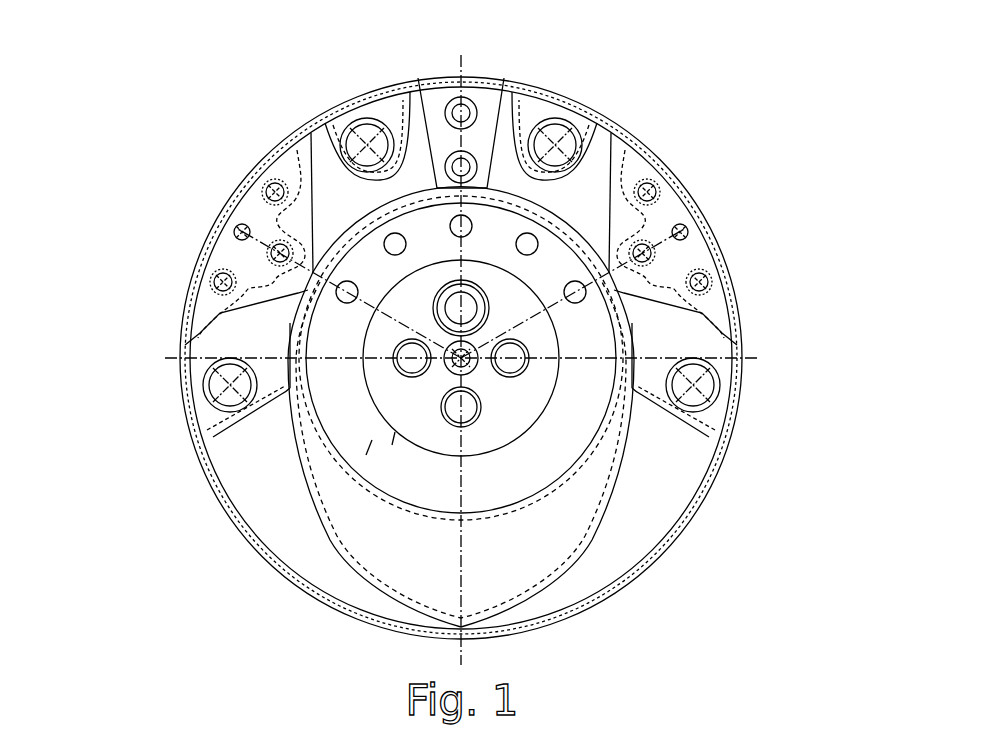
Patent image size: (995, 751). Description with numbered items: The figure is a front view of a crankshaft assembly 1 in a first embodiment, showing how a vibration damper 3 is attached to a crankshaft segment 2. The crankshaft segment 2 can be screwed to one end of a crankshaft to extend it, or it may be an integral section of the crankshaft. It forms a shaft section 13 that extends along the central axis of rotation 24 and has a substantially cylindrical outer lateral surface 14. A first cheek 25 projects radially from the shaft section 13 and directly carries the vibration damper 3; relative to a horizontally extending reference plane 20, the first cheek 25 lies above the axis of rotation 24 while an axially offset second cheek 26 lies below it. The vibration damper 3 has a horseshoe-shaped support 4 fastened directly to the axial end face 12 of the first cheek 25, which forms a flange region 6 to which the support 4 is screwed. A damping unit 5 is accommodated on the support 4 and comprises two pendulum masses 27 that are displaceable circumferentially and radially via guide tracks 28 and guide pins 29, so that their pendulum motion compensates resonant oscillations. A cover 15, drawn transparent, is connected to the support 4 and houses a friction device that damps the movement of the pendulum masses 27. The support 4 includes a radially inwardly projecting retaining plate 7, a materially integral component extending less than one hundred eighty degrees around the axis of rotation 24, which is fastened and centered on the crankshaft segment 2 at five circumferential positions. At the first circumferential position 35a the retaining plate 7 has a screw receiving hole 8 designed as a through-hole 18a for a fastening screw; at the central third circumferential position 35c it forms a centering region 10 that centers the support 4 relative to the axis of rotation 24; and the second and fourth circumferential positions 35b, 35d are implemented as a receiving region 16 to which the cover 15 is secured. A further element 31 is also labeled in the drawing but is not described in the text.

The crankshaft assembly 1 is at (485, 332).
The crankshaft segment 2 is at (465, 364).
The vibration damper 3 is at (192, 247).
The support 4 is at (442, 128).
The damping unit 5 is at (338, 117).
The flange region 6 is at (335, 332).
The retaining plate 7 is at (420, 228).
The screw receiving hole 8 is at (430, 203).
The centering region 10 is at (461, 159).
The end face 12 is at (586, 345).
The shaft section 13 is at (465, 364).
The outer lateral surface 14 is at (372, 440).
The cover 15 is at (203, 376).
The receiving region 16 is at (436, 298).
The through-hole 18a is at (430, 203).
The reference plane 20 is at (395, 430).
The axis of rotation 24 is at (560, 325).
The first cheek 25 is at (686, 100).
The second cheek 26 is at (578, 580).
The pendulum masses 27 is at (195, 343).
The guide tracks 28 is at (362, 124).
The guide pins 29 is at (461, 261).
The cover 31 is at (725, 262).
The first circumferential position 35a is at (343, 288).
The second circumferential position 35b is at (436, 298).
The third circumferential position 35c is at (464, 216).
The fourth circumferential position 35d is at (338, 272).